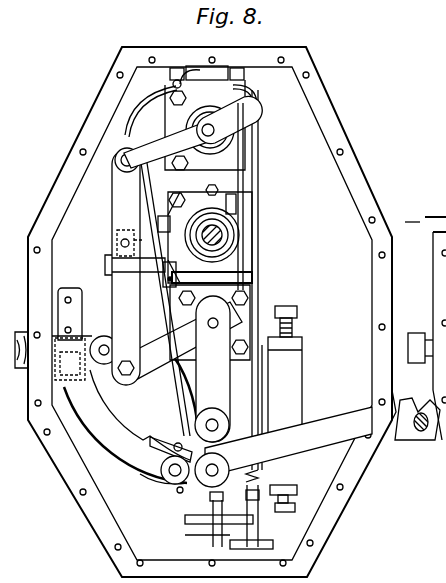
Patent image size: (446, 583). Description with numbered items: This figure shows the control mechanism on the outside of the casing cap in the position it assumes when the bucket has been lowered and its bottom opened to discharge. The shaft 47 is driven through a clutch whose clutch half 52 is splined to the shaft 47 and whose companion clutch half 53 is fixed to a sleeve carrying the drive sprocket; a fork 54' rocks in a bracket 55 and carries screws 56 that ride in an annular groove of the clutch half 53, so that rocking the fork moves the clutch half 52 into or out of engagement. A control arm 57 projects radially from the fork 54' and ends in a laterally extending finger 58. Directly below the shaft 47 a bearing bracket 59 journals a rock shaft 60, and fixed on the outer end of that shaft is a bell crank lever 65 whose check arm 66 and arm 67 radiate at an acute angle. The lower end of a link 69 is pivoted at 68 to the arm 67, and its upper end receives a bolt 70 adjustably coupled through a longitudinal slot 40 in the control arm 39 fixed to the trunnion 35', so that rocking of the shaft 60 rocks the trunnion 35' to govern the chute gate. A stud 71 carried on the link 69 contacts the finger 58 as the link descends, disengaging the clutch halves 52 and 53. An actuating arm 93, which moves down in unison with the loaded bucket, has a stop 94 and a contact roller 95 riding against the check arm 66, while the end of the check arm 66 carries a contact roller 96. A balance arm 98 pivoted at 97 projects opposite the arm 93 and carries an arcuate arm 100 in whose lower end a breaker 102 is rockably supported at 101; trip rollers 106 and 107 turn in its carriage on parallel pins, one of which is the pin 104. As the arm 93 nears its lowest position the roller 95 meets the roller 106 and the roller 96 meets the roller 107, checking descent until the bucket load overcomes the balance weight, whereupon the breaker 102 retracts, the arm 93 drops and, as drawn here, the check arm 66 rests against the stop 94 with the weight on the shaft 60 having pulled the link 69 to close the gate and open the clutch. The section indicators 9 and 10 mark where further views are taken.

The section line 9 is at (428, 214).
The section line 10 is at (412, 222).
The trunnion 35' is at (248, 127).
The control arm 39 is at (193, 132).
The longitudinal slot 40 is at (148, 161).
The shaft 47 is at (236, 222).
The clutch half 52 is at (241, 217).
The clutch half 53 is at (236, 203).
The fork 54' is at (247, 240).
The bracket 55 is at (222, 277).
The screws 56 is at (222, 235).
The control arm 57 is at (165, 263).
The finger 58 is at (123, 265).
The bearing bracket 59 is at (243, 320).
The rock shaft 60 is at (213, 329).
The bell crank lever 65 is at (240, 384).
The check arm 66 is at (222, 397).
The arm 67 is at (163, 365).
The pivotal connection 68 is at (125, 378).
The link 69 is at (126, 267).
The bolt 70 is at (124, 165).
The stud 71 is at (117, 240).
The actuating arm 93 is at (288, 442).
The stop 94 is at (247, 421).
The contact roller 95 is at (216, 470).
The contact roller 96 is at (226, 465).
The pivot 97 is at (108, 353).
The balance arm 98 is at (72, 378).
The arcuate arm 100 is at (127, 426).
The pivot 101 is at (173, 476).
The breaker 102 is at (148, 487).
The pin 104 is at (177, 444).
The trip roller 106 is at (180, 505).
The trip roller 107 is at (209, 423).